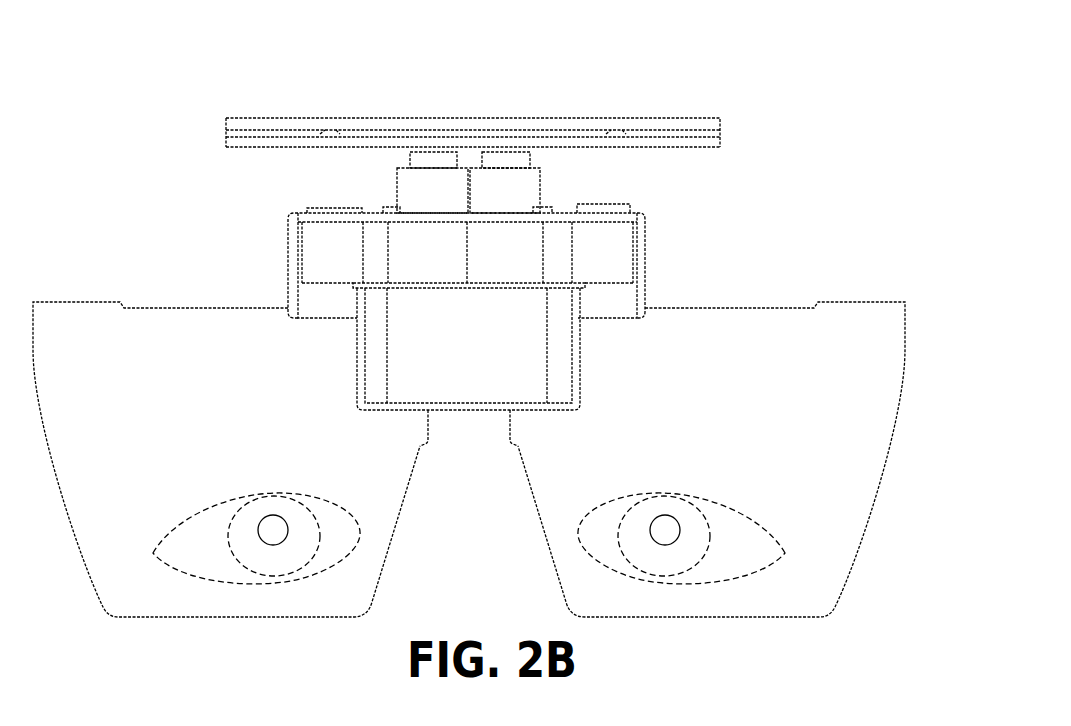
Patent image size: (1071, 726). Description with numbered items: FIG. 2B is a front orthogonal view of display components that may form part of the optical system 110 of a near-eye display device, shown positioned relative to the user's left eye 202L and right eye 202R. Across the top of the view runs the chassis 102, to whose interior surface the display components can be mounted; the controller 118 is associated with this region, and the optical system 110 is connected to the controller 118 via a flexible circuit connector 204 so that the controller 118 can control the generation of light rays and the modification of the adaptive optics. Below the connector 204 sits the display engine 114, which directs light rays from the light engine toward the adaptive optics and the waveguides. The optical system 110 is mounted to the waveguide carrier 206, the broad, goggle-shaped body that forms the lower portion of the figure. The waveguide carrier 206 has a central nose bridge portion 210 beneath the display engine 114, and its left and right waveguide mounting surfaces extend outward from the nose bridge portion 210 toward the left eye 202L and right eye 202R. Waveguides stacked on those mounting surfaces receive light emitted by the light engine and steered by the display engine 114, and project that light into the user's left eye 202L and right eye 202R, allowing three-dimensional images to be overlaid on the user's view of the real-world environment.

The chassis 102 is at (678, 118).
The controller 118 is at (255, 147).
The optical system 110 is at (575, 281).
The flexible circuit connector 204 is at (540, 182).
The display engine 114 is at (637, 258).
The central nose bridge portion 210 is at (458, 443).
The waveguide carrier 206 is at (858, 568).
The right eye 202R is at (320, 524).
The left eye 202L is at (705, 525).